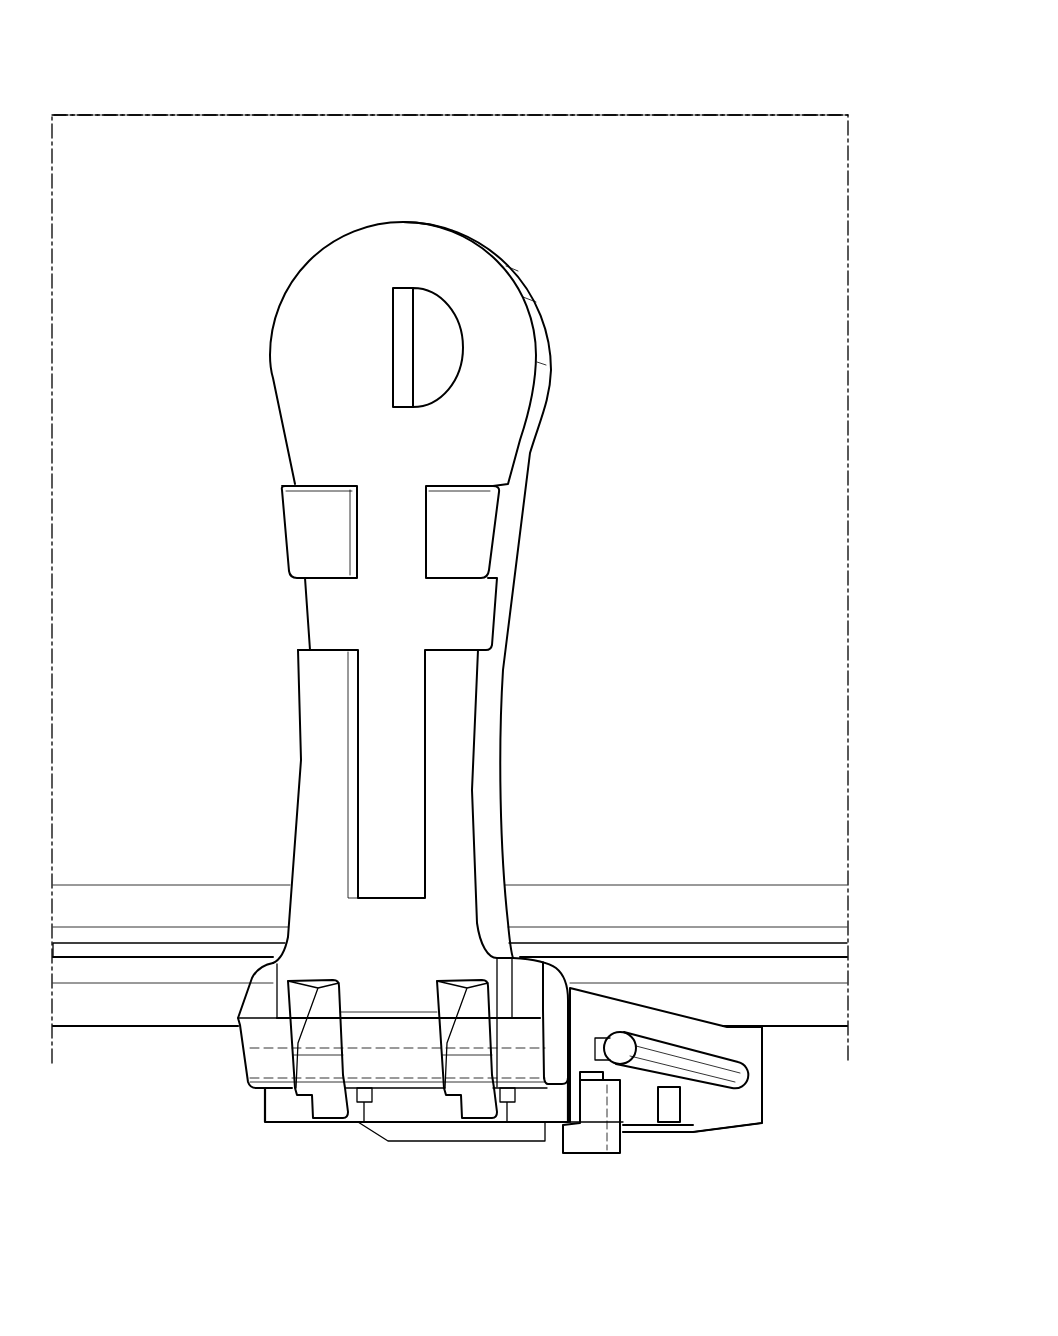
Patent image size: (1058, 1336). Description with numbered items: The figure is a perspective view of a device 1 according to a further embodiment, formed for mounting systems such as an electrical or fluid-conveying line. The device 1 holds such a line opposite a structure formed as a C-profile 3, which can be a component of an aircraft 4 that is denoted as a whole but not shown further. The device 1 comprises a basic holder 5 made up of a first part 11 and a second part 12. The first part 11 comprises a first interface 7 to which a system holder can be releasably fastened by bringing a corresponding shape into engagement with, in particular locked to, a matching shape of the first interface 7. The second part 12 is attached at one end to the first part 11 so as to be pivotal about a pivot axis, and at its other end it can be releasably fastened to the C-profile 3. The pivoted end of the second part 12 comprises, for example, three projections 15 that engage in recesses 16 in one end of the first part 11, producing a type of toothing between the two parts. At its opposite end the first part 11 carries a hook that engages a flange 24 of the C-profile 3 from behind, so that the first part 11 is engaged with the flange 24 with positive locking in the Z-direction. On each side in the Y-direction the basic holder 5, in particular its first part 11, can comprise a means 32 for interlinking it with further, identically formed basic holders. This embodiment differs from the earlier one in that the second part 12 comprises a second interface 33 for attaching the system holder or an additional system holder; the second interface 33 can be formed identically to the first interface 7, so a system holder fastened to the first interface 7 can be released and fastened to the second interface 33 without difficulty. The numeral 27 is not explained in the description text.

The device 1 is at (268, 454).
The C-profile 3 is at (756, 134).
The aircraft 4 is at (624, 63).
The basic holder 5 is at (768, 1135).
The first interface 7 is at (637, 1125).
The first part 11 is at (753, 1105).
The second part 12 is at (318, 752).
The projections 15 is at (253, 1062).
The recesses 16 is at (298, 1130).
The flange 24 is at (153, 1013).
The housing wall 27 is at (180, 147).
The means for interlinking 32 is at (740, 1075).
The second interface 33 is at (383, 610).